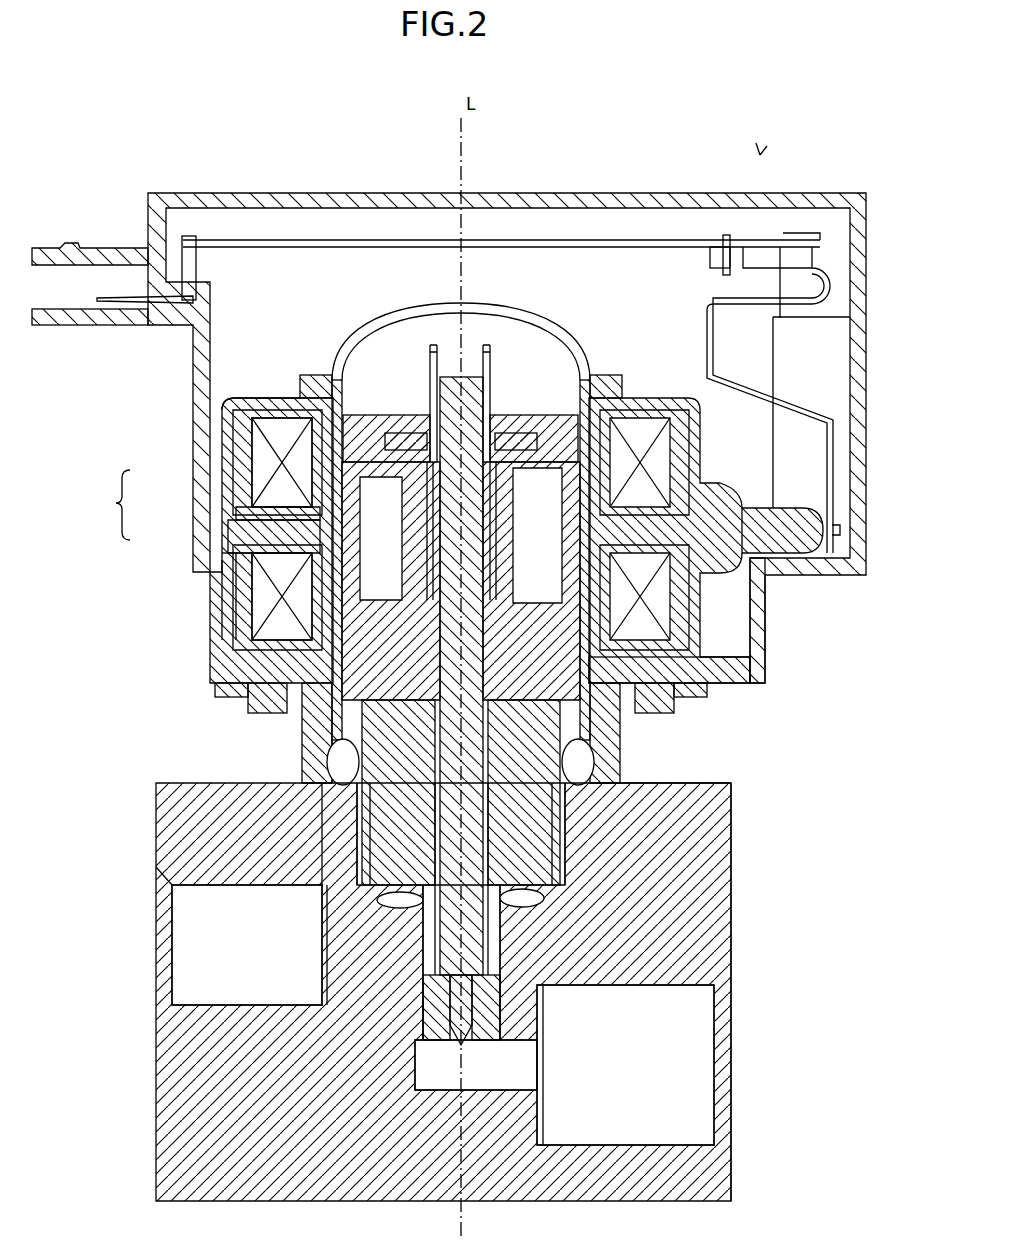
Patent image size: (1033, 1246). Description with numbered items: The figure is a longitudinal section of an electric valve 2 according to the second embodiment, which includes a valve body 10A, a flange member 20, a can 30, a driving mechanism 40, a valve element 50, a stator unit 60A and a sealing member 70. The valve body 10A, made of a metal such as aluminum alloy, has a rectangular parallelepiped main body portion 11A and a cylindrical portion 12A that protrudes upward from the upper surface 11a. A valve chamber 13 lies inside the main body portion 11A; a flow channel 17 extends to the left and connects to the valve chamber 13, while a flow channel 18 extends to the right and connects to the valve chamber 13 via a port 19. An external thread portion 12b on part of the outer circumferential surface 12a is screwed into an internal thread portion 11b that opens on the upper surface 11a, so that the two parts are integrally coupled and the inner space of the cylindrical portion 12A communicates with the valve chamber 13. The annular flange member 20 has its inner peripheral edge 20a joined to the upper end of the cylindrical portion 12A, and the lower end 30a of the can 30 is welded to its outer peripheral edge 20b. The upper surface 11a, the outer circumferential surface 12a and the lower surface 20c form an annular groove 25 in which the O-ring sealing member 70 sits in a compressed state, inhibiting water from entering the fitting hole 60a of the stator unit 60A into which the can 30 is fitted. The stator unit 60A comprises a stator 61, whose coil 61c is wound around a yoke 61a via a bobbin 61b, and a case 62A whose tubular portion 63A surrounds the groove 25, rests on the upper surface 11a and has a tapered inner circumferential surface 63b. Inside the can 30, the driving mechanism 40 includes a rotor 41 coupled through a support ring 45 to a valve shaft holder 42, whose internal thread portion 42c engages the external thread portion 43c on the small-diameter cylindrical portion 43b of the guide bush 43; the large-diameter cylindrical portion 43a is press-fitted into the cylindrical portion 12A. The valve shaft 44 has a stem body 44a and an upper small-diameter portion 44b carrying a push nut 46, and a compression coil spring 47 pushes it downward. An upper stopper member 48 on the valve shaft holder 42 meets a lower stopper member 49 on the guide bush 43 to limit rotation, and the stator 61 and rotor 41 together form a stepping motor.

The electric valve 2 is at (760, 155).
The stator unit 60A is at (596, 193).
The case 62A is at (693, 193).
The fitting hole 60a is at (610, 385).
The can 30 is at (352, 318).
The lower end of the can 30a is at (250, 710).
The driving mechanism 40 is at (398, 420).
The rotor 41 is at (400, 430).
The valve shaft holder 42 is at (265, 465).
The internal thread portion 42c is at (232, 587).
The guide bush 43 is at (210, 645).
The large-diameter cylindrical portion 43a is at (320, 790).
The small-diameter cylindrical portion 43b is at (225, 562).
The external thread portion 43c is at (233, 612).
The valve shaft 44 is at (440, 957).
The stem body 44a is at (430, 936).
The upper small-diameter portion 44b is at (465, 375).
The support ring 45 is at (338, 365).
The push nut 46 is at (413, 412).
The compression coil spring 47 is at (230, 419).
The upper stopper member 48 is at (760, 636).
The lower stopper member 49 is at (760, 675).
The stator 61 is at (202, 555).
The yoke 61a is at (275, 520).
The bobbin 61b is at (280, 500).
The coil 61c is at (318, 470).
The flange member 20 is at (315, 736).
The inner peripheral edge 20a is at (220, 675).
The outer peripheral edge 20b is at (352, 757).
The lower surface 20c is at (635, 723).
The sealing member 70 is at (333, 772).
The inner circumferential surface 63b is at (600, 757).
The tubular portion 63A is at (570, 790).
The groove 25 is at (600, 785).
The valve body 10A is at (731, 1170).
The main body portion 11A is at (731, 885).
The upper surface 11a is at (590, 775).
The internal thread portion 11b is at (350, 830).
The cylindrical portion 12A is at (335, 882).
The outer circumferential surface 12a is at (620, 745).
The external thread portion 12b is at (355, 850).
The valve chamber 13 is at (500, 940).
The flow channel 17 is at (205, 995).
The flow channel 18 is at (700, 1135).
The port 19 is at (535, 1035).
The valve element 50 is at (535, 1007).